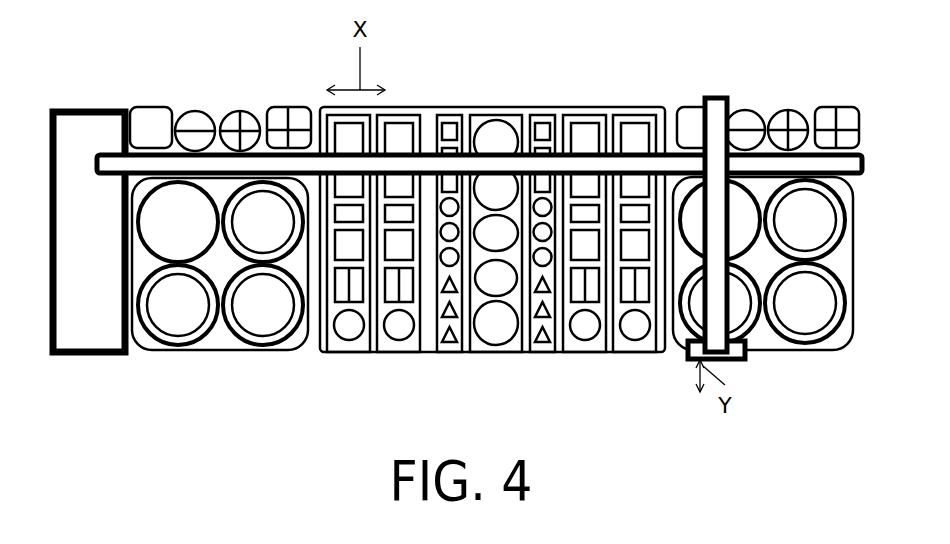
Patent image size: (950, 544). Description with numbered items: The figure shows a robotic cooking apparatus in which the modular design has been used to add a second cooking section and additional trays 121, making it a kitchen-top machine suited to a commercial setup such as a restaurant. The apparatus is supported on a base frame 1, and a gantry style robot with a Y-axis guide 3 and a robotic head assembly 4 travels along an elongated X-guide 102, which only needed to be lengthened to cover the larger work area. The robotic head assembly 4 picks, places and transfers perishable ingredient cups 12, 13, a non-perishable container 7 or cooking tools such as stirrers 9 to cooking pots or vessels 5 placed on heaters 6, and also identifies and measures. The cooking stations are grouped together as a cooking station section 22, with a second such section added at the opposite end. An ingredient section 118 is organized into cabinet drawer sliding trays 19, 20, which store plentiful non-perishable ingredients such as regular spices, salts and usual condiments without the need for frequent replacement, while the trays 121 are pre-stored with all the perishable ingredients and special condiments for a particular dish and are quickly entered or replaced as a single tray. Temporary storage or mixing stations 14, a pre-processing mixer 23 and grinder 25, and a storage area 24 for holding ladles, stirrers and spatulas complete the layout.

The base frame 1 is at (90, 112).
The Y-axis guide 3 is at (378, 107).
The robotic head assembly 4 is at (690, 360).
The cooking pots or vessels 5 is at (178, 304).
The heaters 6 is at (155, 325).
The non-perishable container 7 is at (543, 123).
The stirrers 9 is at (440, 345).
The perishable ingredient cup 12 is at (511, 340).
The perishable ingredient cup 13 is at (637, 338).
The temporary storage or mixing station 14 is at (150, 108).
The sliding tray 19 is at (450, 347).
The sliding tray 20 is at (497, 348).
The cooking station section 22 is at (192, 350).
The mixer 23 is at (202, 112).
The storage area 24 is at (287, 108).
The grinder 25 is at (786, 112).
The X-guide 102 is at (863, 157).
The ingredient section 118 is at (522, 107).
The trays 121 is at (613, 348).